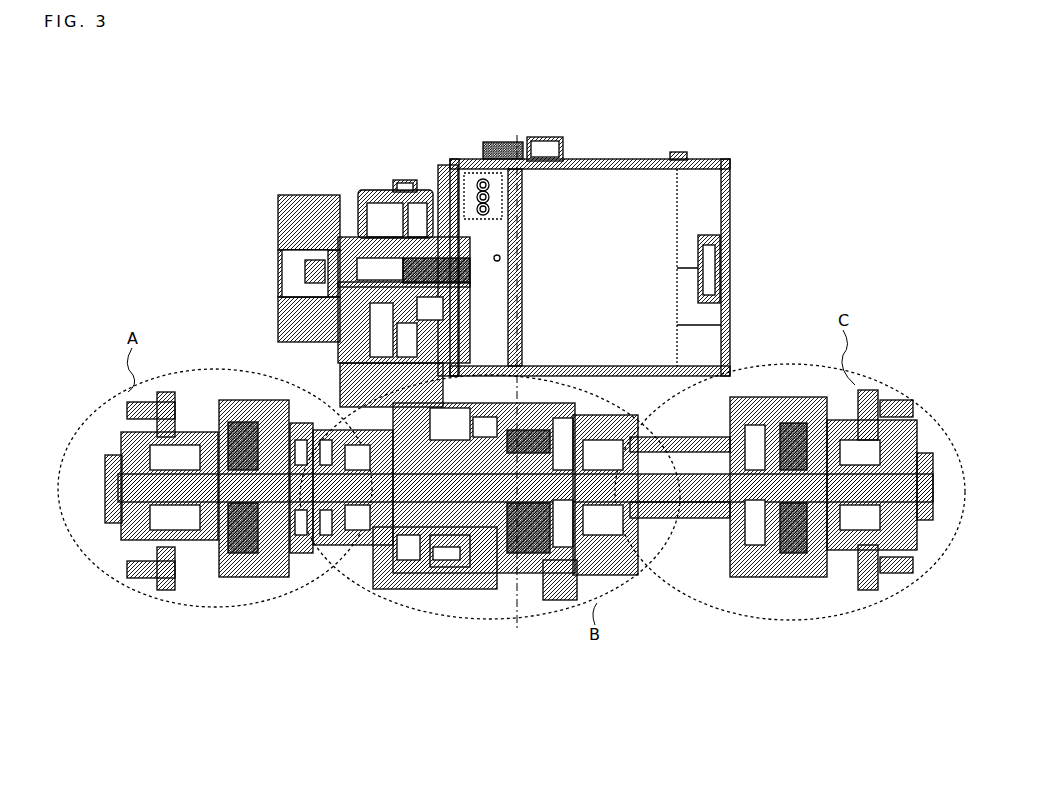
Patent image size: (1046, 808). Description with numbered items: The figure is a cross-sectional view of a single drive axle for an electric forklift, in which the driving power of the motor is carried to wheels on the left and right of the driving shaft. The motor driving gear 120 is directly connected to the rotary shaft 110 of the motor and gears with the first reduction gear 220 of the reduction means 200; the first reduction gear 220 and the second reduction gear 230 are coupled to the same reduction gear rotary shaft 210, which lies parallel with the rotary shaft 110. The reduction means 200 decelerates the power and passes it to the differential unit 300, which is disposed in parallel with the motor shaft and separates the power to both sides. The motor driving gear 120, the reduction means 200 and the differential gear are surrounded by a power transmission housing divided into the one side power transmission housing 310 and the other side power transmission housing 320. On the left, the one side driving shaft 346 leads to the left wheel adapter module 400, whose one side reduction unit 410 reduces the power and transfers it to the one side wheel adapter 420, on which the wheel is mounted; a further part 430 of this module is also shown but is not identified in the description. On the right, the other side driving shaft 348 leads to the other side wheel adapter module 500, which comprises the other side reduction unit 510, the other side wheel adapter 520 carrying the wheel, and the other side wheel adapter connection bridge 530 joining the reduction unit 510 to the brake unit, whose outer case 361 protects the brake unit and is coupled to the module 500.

The rotary shaft of the motor 110 is at (440, 172).
The motor driving gear 120 is at (385, 207).
The reduction means 200 is at (298, 301).
The reduction gear rotary shaft 210 is at (269, 308).
The first reduction gear 220 is at (300, 253).
The second reduction gear 230 is at (277, 290).
The differential unit 300 is at (406, 519).
The one side power transmission housing 310 is at (320, 420).
The other side power transmission housing 320 is at (520, 410).
The one side driving shaft 346 is at (222, 412).
The other side driving shaft 348 is at (740, 412).
The outer case of the brake unit 361 is at (560, 604).
The left wheel adapter module 400 is at (200, 553).
The one side reduction unit 410 is at (240, 588).
The one side wheel adapter 420 is at (204, 540).
The left flange 430 is at (275, 588).
The other side wheel adapter module 500 is at (800, 557).
The other side reduction unit 510 is at (800, 592).
The other side wheel adapter 520 is at (880, 530).
The other side wheel adapter connection bridge 530 is at (670, 602).